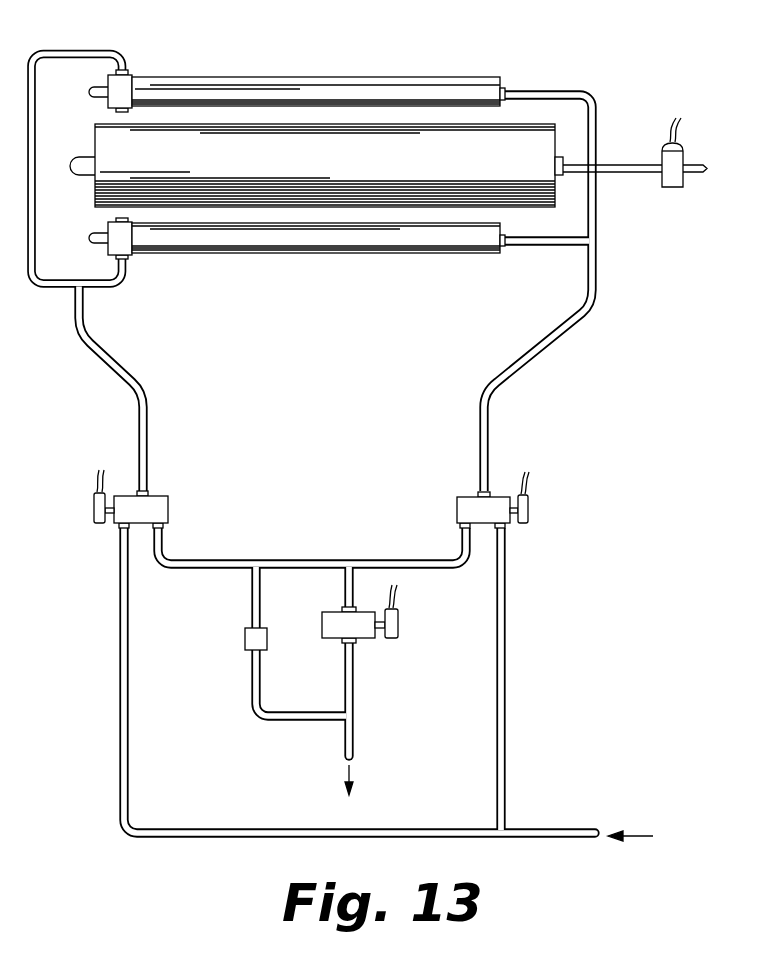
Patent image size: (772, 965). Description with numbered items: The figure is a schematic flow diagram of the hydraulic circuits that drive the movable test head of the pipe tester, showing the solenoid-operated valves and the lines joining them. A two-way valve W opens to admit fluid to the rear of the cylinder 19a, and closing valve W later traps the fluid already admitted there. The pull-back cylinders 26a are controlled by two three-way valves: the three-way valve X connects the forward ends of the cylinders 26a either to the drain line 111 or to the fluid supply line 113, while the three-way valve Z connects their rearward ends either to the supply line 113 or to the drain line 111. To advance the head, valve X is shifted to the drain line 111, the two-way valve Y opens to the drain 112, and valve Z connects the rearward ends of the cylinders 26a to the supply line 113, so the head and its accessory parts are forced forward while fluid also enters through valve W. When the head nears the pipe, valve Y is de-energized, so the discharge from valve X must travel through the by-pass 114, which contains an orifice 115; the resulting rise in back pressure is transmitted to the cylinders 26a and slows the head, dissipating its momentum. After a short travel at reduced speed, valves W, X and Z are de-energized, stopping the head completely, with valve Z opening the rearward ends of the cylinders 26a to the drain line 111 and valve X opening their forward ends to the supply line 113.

The pull-back cylinders 26a is at (400, 85).
The cylinder 19a is at (503, 137).
The two-way valve W is at (675, 178).
The three-way valve X is at (153, 503).
The two-way valve Y is at (333, 610).
The three-way valve Z is at (465, 497).
The drain line 111 is at (210, 560).
The drain 112 is at (354, 695).
The supply line 113 is at (123, 695).
The by-pass 114 is at (255, 680).
The orifice 115 is at (245, 636).